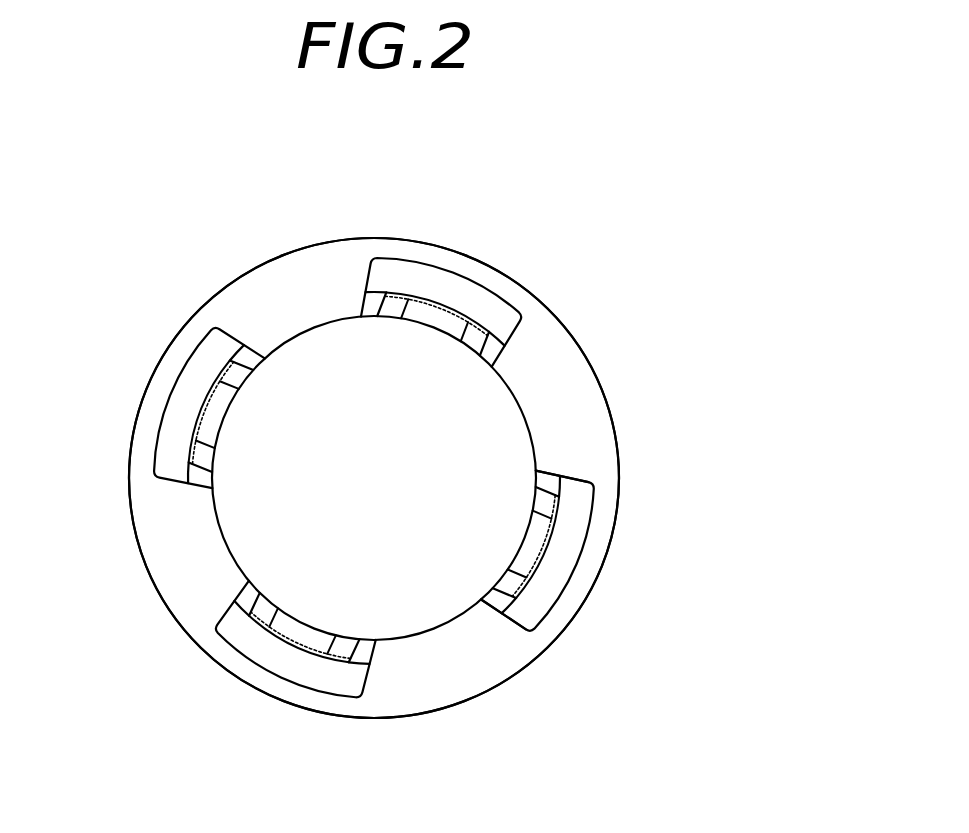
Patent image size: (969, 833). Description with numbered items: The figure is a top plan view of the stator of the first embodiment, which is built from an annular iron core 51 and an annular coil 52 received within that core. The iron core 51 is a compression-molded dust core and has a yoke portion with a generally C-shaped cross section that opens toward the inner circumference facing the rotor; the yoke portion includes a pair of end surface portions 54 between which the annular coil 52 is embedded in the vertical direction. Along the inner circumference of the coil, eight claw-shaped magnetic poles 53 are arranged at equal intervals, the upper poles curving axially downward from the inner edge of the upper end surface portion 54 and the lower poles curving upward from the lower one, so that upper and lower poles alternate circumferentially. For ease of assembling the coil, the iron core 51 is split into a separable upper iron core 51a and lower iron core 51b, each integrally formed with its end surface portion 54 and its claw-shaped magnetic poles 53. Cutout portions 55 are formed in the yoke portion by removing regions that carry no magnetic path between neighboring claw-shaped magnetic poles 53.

The iron core 51 is at (777, 350).
The upper iron core 51a is at (638, 460).
The lower iron core 51b is at (472, 378).
The annular coil 52 is at (576, 529).
The claw-shaped magnetic poles 53 is at (216, 408).
The end surface portions 54 is at (302, 263).
The cutout portions 55 is at (428, 268).